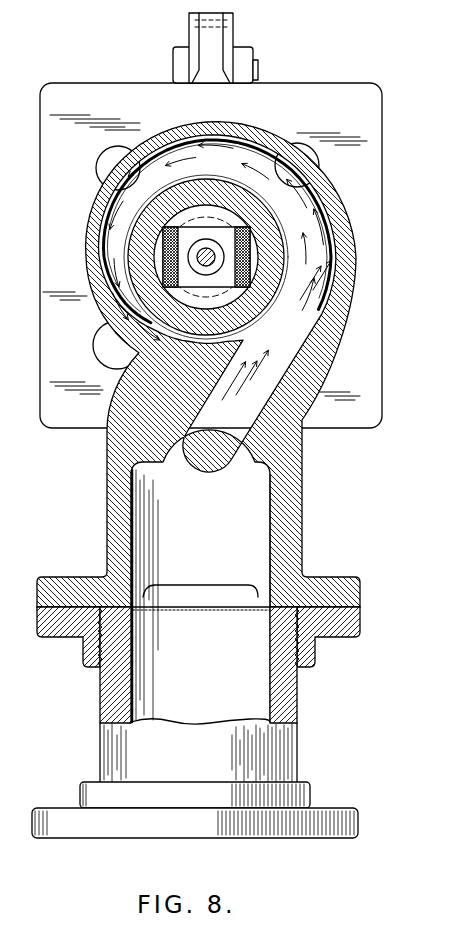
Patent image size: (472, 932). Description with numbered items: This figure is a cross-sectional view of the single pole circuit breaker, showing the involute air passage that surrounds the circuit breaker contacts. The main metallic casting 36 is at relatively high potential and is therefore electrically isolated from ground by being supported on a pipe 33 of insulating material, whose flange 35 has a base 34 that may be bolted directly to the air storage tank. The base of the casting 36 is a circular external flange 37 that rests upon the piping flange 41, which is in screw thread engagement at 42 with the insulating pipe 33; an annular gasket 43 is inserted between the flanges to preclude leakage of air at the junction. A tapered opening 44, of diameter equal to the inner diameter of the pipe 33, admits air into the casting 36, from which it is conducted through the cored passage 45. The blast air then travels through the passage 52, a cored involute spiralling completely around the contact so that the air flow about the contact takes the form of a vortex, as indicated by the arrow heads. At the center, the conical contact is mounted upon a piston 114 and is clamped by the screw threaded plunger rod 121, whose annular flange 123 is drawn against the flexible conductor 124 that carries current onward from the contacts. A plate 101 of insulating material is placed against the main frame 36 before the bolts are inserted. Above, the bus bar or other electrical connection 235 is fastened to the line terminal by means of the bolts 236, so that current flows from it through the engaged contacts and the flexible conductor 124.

The bus bar 235 is at (189, 27).
The bolts 236 is at (175, 52).
The plate of insulating material 101 is at (310, 95).
The piston 114 is at (148, 212).
The flexible conductor 124 is at (162, 263).
The plunger rod 121 is at (207, 252).
The annular flange 123 is at (205, 268).
The passage 52 is at (220, 291).
The main metallic casting 36 is at (278, 220).
The cored passage 45 is at (201, 596).
The tapered opening 44 is at (198, 592).
The external flange 37 is at (317, 588).
The annular gasket 43 is at (361, 608).
The piping flange 41 is at (361, 625).
The screw thread engagement 42 is at (316, 655).
The pipe 33 is at (298, 690).
The flange 35 is at (308, 782).
The base 34 is at (188, 830).